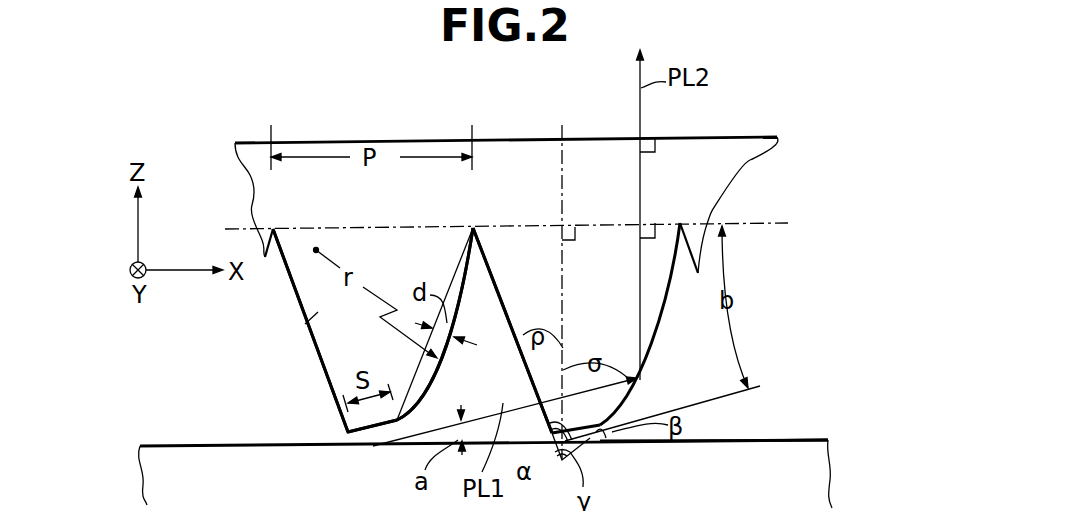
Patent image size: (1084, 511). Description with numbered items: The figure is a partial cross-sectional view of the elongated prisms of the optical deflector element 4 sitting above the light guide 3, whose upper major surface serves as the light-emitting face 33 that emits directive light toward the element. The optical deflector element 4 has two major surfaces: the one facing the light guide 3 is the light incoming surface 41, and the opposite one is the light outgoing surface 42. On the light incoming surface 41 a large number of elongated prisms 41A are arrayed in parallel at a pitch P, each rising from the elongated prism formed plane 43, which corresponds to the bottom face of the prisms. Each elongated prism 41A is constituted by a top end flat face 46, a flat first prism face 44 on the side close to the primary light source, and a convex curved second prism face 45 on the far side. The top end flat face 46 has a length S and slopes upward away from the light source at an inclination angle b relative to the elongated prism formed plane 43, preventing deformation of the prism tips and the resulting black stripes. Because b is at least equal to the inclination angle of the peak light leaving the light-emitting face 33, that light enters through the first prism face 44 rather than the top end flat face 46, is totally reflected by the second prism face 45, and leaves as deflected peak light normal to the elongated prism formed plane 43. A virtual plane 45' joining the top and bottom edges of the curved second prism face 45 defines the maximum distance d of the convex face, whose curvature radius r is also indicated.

The light guide 3 is at (165, 430).
The light-emitting face 33 is at (813, 440).
The optical deflector element 4 is at (735, 123).
The light outgoing surface 42 is at (345, 143).
The elongated prism formed plane 43 is at (765, 218).
The light incoming surface 41 is at (308, 375).
The elongated prism 41A is at (312, 317).
The first prism face 44 is at (276, 258).
The second prism face 45 is at (557, 324).
The virtual plane 45' is at (435, 305).
The top end flat face 46 is at (365, 437).